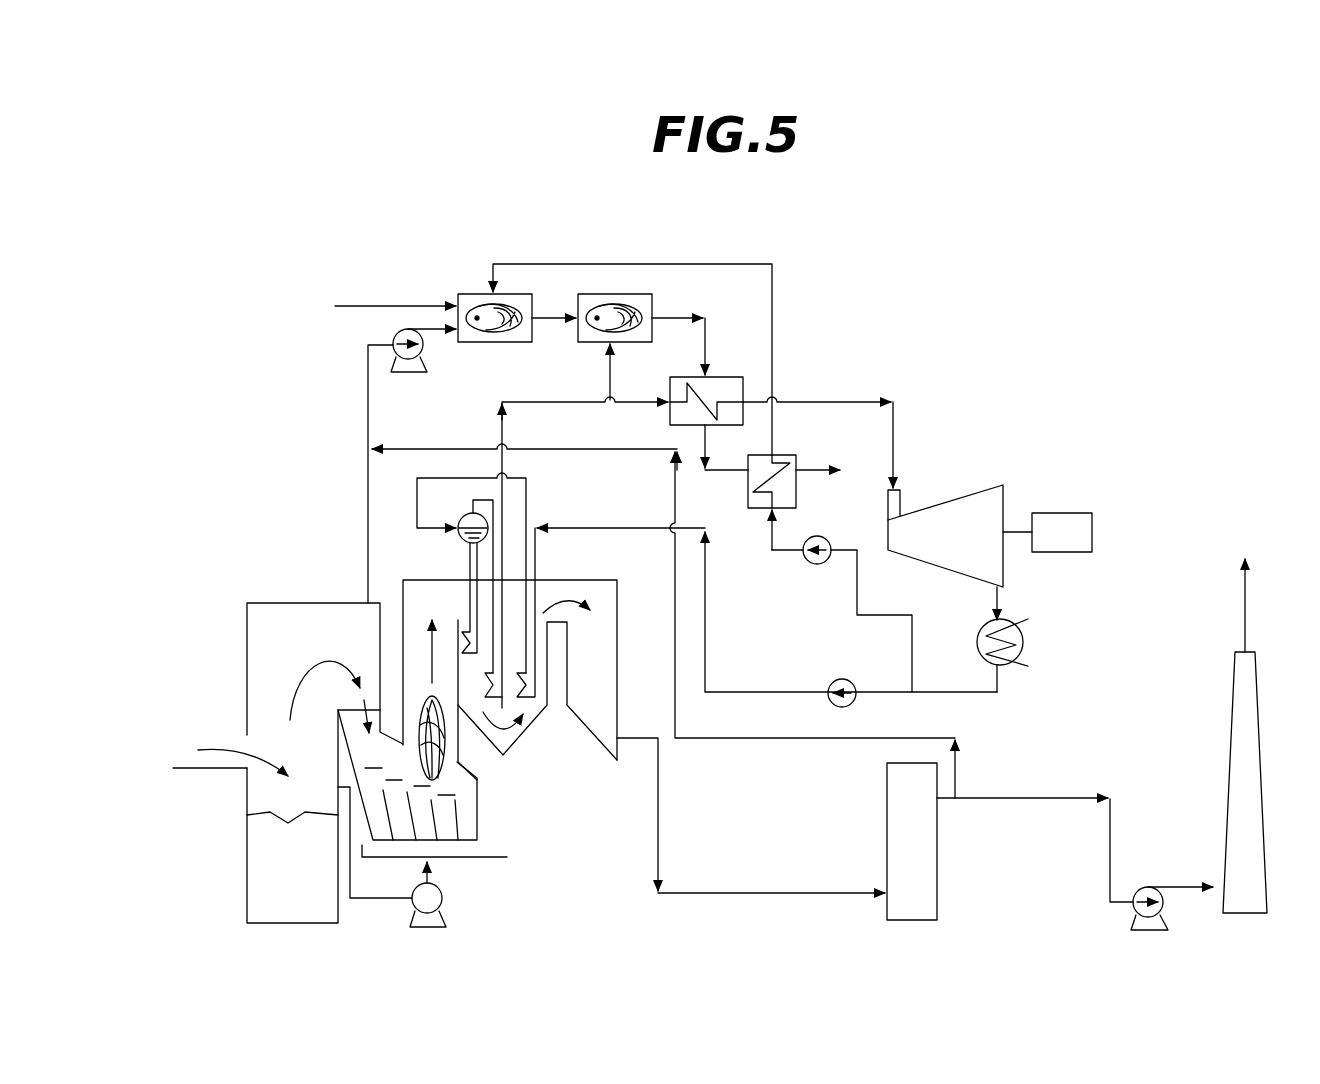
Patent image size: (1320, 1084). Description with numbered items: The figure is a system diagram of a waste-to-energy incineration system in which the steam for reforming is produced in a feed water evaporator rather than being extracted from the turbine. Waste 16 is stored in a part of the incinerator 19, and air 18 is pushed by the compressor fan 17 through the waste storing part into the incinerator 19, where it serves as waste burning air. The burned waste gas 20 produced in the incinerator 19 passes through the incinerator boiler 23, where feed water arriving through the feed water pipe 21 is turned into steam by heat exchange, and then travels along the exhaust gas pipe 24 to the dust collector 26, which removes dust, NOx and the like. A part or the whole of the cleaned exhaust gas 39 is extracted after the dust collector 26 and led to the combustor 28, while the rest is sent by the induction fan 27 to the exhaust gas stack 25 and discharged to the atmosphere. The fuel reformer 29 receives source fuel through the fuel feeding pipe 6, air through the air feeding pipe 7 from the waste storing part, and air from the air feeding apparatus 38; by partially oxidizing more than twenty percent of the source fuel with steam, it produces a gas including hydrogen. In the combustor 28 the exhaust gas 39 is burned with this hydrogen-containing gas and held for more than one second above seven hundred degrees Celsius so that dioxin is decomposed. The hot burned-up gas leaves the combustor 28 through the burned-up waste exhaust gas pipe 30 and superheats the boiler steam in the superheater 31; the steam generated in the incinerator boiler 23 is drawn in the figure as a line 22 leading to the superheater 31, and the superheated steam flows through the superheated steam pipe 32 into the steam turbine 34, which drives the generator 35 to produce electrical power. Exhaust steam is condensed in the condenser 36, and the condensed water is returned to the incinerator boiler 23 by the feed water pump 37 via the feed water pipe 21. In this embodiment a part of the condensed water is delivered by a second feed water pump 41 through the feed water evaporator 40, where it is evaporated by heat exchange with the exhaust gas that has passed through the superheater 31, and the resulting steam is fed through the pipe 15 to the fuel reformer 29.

The fuel feeding pipe 6 is at (413, 305).
The air feeding pipe 7 is at (368, 456).
The pipe 15 is at (772, 300).
The waste 16 is at (205, 750).
The compressor fan 17 is at (445, 905).
The air 18 is at (432, 873).
The incinerator 19 is at (472, 805).
The burned waste gas 20 is at (418, 588).
The feed water pipe 21 is at (708, 627).
The steam line 22 is at (540, 403).
The incinerator boiler 23 is at (468, 563).
The exhaust gas pipe 24 is at (785, 893).
The exhaust gas stack 25 is at (1232, 766).
The dust collector 26 is at (940, 900).
The induction fan 27 is at (1163, 908).
The combustor 28 is at (630, 294).
The fuel reformer 29 is at (462, 294).
The burned-up waste exhaust gas pipe 30 is at (672, 316).
The superheater 31 is at (730, 378).
The superheated steam pipe 32 is at (812, 402).
The steam turbine 34 is at (968, 495).
The generator 35 is at (1062, 520).
The condenser 36 is at (1025, 632).
The feed water pump 37 is at (848, 678).
The air feeding apparatus 38 is at (420, 348).
The exhaust gas 39 is at (675, 505).
The feed water evaporator 40 is at (795, 470).
The feed water pump 41 is at (815, 566).